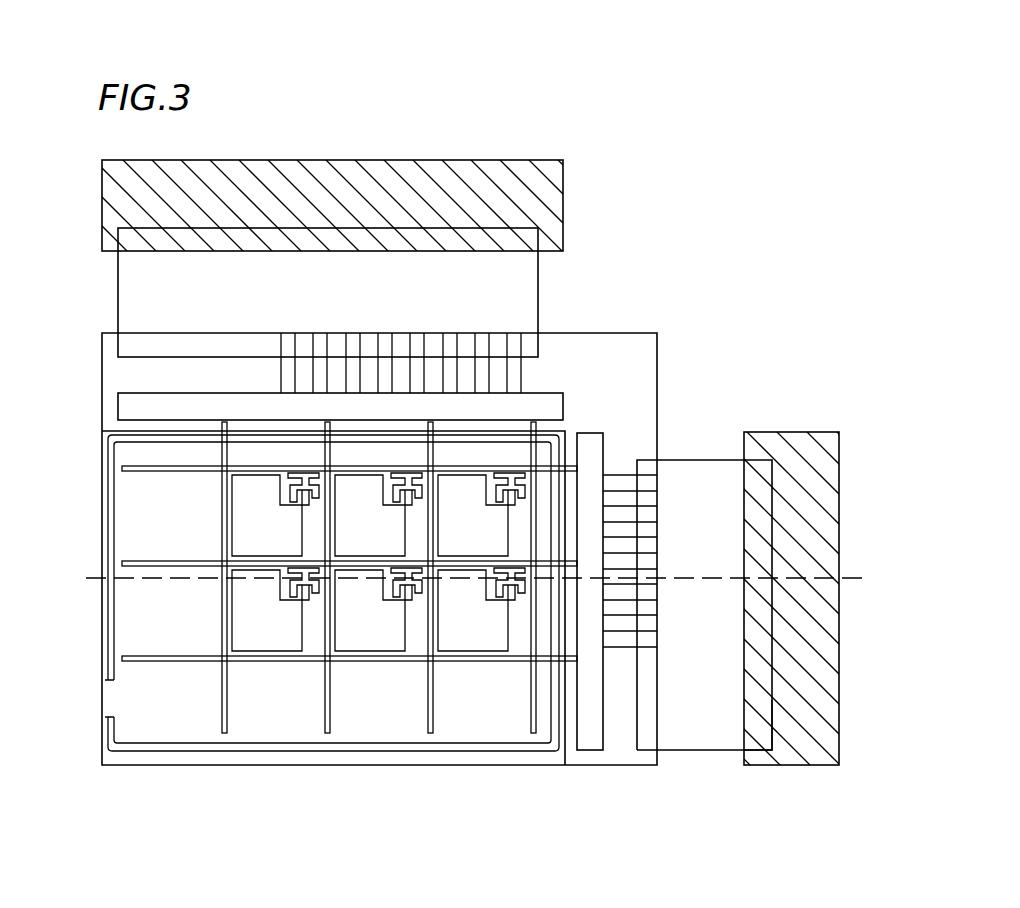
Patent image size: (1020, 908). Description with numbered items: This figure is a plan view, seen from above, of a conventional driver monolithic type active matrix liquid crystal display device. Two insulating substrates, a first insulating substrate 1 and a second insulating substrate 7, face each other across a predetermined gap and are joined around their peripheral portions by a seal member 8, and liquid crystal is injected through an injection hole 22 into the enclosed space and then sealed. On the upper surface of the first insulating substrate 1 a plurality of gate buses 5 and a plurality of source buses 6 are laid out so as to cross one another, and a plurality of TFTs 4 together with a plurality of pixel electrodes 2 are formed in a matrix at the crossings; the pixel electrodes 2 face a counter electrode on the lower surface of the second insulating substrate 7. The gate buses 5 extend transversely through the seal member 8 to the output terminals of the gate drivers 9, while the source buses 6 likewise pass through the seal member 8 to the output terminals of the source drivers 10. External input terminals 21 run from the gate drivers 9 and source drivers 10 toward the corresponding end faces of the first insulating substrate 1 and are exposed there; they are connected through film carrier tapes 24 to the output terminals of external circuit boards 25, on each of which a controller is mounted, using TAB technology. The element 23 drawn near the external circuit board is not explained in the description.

The TFT array substrate 1 is at (628, 350).
The pixel electrode 2 is at (262, 642).
The thin film transistor 4 is at (425, 495).
The gate line 5 is at (134, 563).
The data line 6 is at (223, 717).
The seal member 7 is at (106, 438).
The counter substrate 8 is at (382, 743).
The terminal portion 9 is at (590, 740).
The common electrode terminal 10 is at (128, 404).
The flexible printed circuit board 21 is at (618, 643).
The liquid crystal injection port 22 is at (113, 698).
The connection electrode 23 is at (762, 748).
The driver circuit board 24 is at (713, 473).
The backlight frame 25 is at (798, 443).